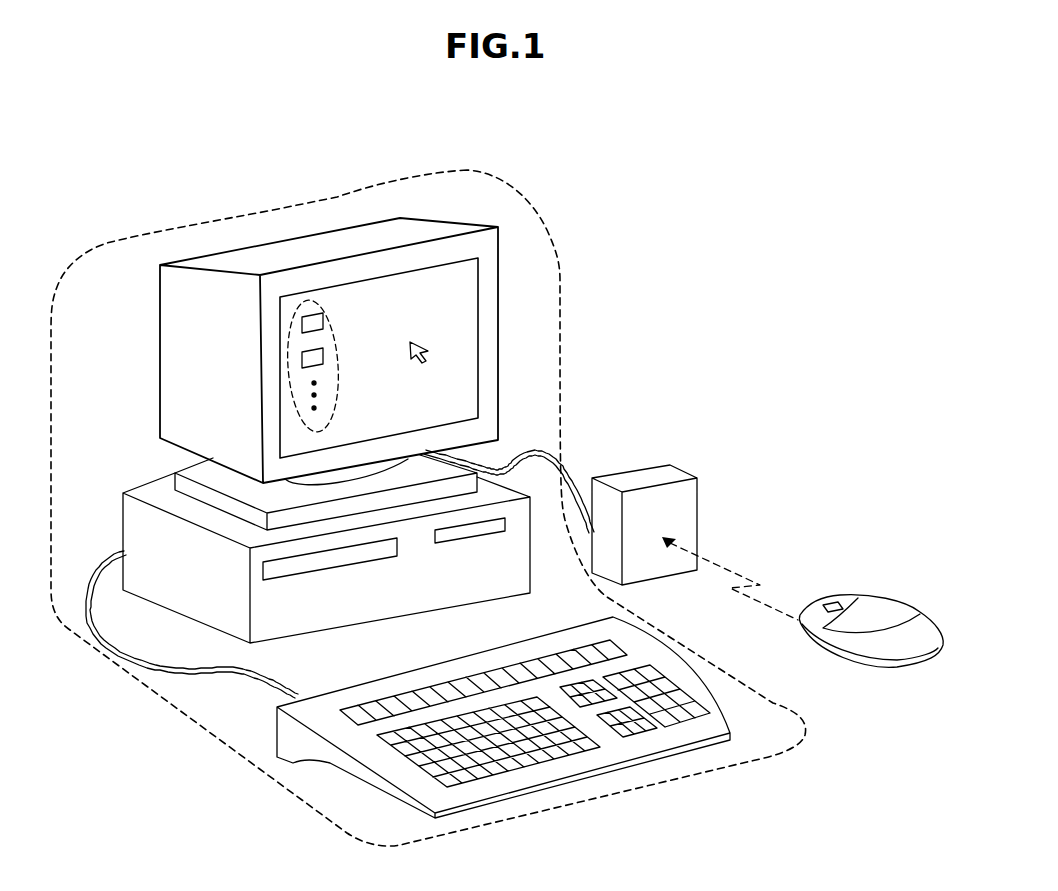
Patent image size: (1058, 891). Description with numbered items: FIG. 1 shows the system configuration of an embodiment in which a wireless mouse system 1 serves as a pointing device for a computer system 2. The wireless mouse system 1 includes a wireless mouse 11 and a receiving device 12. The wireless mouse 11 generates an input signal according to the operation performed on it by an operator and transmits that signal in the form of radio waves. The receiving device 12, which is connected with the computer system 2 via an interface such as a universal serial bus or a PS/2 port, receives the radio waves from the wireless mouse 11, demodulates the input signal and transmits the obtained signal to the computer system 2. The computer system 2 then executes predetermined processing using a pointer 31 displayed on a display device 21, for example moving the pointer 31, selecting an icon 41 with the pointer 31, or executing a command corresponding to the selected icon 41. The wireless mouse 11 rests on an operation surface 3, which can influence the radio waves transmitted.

The wireless mouse system 1 is at (816, 455).
The computer system 2 is at (560, 263).
The operation surface 3 is at (834, 700).
The wireless mouse 11 is at (857, 597).
The receiving device 12 is at (698, 510).
The display device 21 is at (463, 223).
The pointer 31 is at (429, 351).
The icon 41 is at (288, 402).